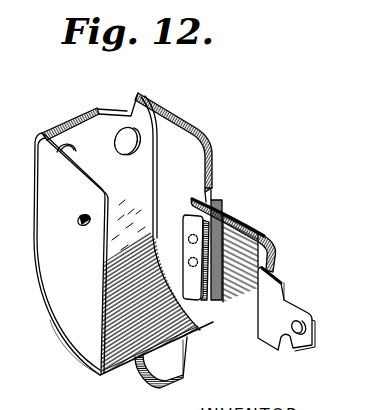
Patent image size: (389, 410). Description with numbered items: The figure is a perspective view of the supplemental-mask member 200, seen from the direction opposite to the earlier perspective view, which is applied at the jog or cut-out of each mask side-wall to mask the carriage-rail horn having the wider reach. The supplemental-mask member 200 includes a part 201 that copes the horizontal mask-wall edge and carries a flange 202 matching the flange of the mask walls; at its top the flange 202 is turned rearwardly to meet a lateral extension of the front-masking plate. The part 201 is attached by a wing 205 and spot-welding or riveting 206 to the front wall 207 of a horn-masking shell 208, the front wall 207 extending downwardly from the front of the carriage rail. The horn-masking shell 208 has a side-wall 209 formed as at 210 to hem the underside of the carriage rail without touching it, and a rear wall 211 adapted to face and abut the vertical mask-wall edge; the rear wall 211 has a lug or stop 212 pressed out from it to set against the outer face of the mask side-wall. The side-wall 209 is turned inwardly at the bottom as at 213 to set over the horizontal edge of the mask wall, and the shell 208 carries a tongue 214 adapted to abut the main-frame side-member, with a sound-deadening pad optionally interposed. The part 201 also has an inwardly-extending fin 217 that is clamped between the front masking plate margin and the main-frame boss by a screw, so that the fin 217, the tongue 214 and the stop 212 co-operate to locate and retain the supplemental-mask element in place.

The supplemental-mask member 200 is at (218, 192).
The part 201 is at (287, 250).
The flange 202 is at (263, 233).
The wing 205 is at (191, 267).
The spot-welding or riveting 206 is at (202, 244).
The front wall 207 is at (183, 115).
The horn-masking shell 208 is at (63, 121).
The side-wall 209 is at (132, 160).
The hem formation 210 is at (108, 111).
The rear wall 211 is at (63, 293).
The lug or stop 212 is at (81, 221).
The inturned bottom 213 is at (73, 356).
The tongue 214 is at (186, 379).
The fin 217 is at (270, 318).